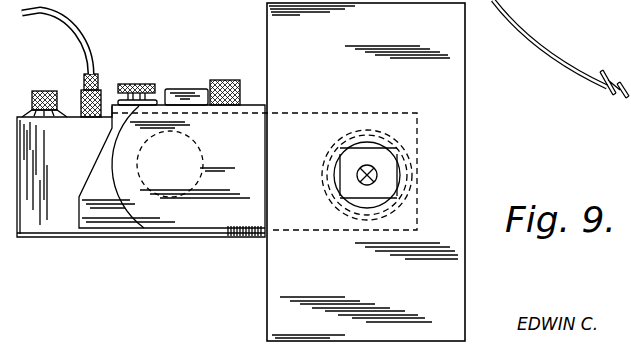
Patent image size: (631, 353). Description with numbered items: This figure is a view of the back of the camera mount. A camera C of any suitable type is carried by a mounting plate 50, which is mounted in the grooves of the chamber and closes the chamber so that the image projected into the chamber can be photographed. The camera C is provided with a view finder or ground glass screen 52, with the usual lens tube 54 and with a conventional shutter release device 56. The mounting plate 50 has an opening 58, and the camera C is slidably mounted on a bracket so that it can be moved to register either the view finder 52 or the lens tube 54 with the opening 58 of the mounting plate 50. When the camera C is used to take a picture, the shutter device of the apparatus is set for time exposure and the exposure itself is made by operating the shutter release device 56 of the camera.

The mounting plate 50 is at (450, 80).
The view finder or ground glass screen 52 is at (403, 135).
The lens tube 54 is at (170, 198).
The shutter release device 56 is at (88, 32).
The opening 58 is at (398, 162).
The camera C is at (66, 226).